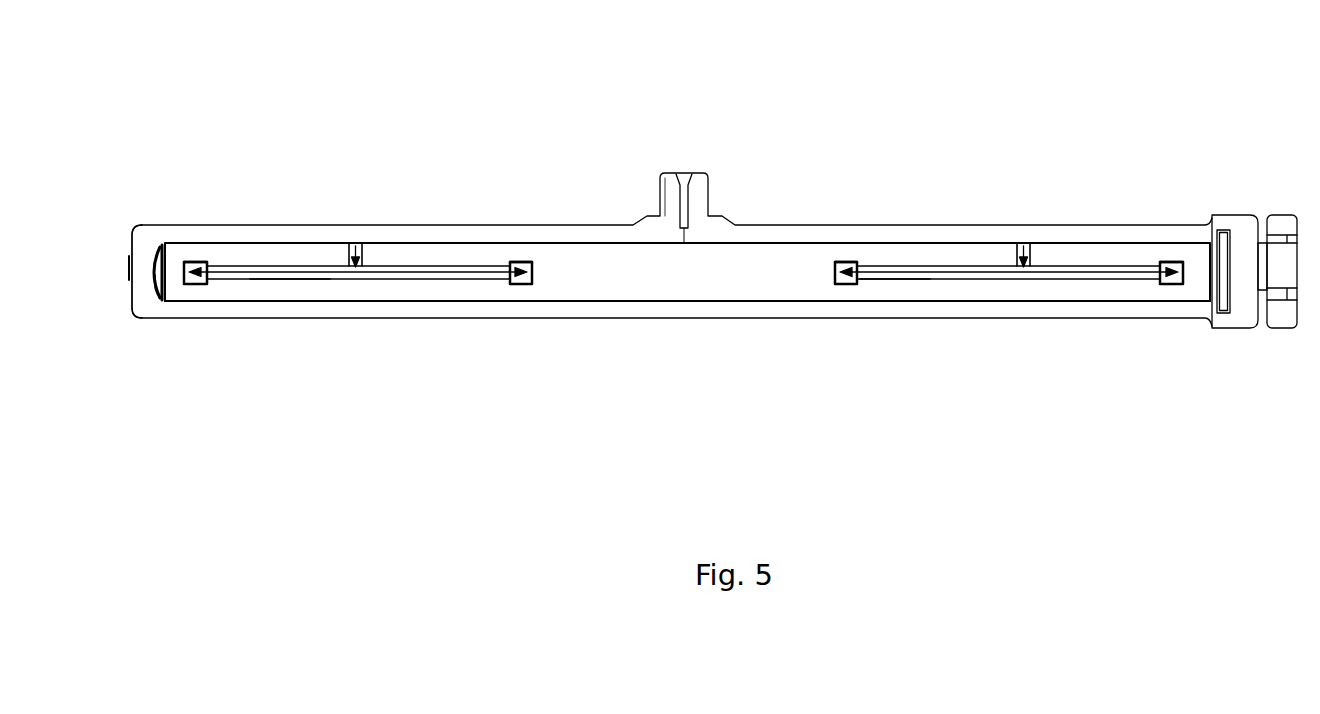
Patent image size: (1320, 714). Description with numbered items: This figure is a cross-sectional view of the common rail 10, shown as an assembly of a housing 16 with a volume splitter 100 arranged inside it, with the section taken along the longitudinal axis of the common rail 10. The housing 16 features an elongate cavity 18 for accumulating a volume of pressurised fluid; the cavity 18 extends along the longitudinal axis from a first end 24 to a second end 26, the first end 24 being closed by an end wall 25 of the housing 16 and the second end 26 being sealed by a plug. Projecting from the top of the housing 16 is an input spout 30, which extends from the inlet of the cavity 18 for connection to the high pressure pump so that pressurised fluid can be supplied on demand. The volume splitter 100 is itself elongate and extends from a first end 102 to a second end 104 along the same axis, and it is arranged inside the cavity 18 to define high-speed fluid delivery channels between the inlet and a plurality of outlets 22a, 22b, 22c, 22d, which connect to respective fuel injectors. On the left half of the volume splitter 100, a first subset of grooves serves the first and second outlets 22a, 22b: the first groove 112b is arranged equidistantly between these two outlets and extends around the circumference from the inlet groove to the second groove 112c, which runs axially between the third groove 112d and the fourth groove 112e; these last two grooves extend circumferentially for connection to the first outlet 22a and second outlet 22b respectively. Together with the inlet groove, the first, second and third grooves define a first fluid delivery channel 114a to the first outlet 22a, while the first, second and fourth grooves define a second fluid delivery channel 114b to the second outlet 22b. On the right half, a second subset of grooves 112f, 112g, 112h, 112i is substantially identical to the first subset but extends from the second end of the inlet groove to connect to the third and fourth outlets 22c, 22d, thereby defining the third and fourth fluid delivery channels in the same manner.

The common rail 10 is at (623, 142).
The housing 16 is at (916, 212).
The cavity 18 is at (798, 226).
The first outlet 22a is at (189, 285).
The second outlet 22b is at (525, 284).
The third outlet 22c is at (844, 284).
The fourth outlet 22d is at (1176, 284).
The first end 24 is at (152, 298).
The end wall 25 is at (133, 230).
The second end 26 is at (1213, 328).
The input spout 30 is at (685, 190).
The volume splitter 100 is at (610, 287).
The first end 102 is at (157, 245).
The second end 104 is at (1205, 245).
The first groove 112b is at (363, 262).
The second groove 112c is at (293, 279).
The third groove 112d is at (195, 262).
The fourth groove 112e is at (520, 262).
The groove of second subset 112f is at (1032, 262).
The groove of second subset 112g is at (888, 279).
The groove of second subset 112h is at (846, 262).
The groove of second subset 112i is at (1170, 262).
The first fluid delivery channel 114a is at (318, 285).
The second fluid delivery channel 114b is at (440, 287).